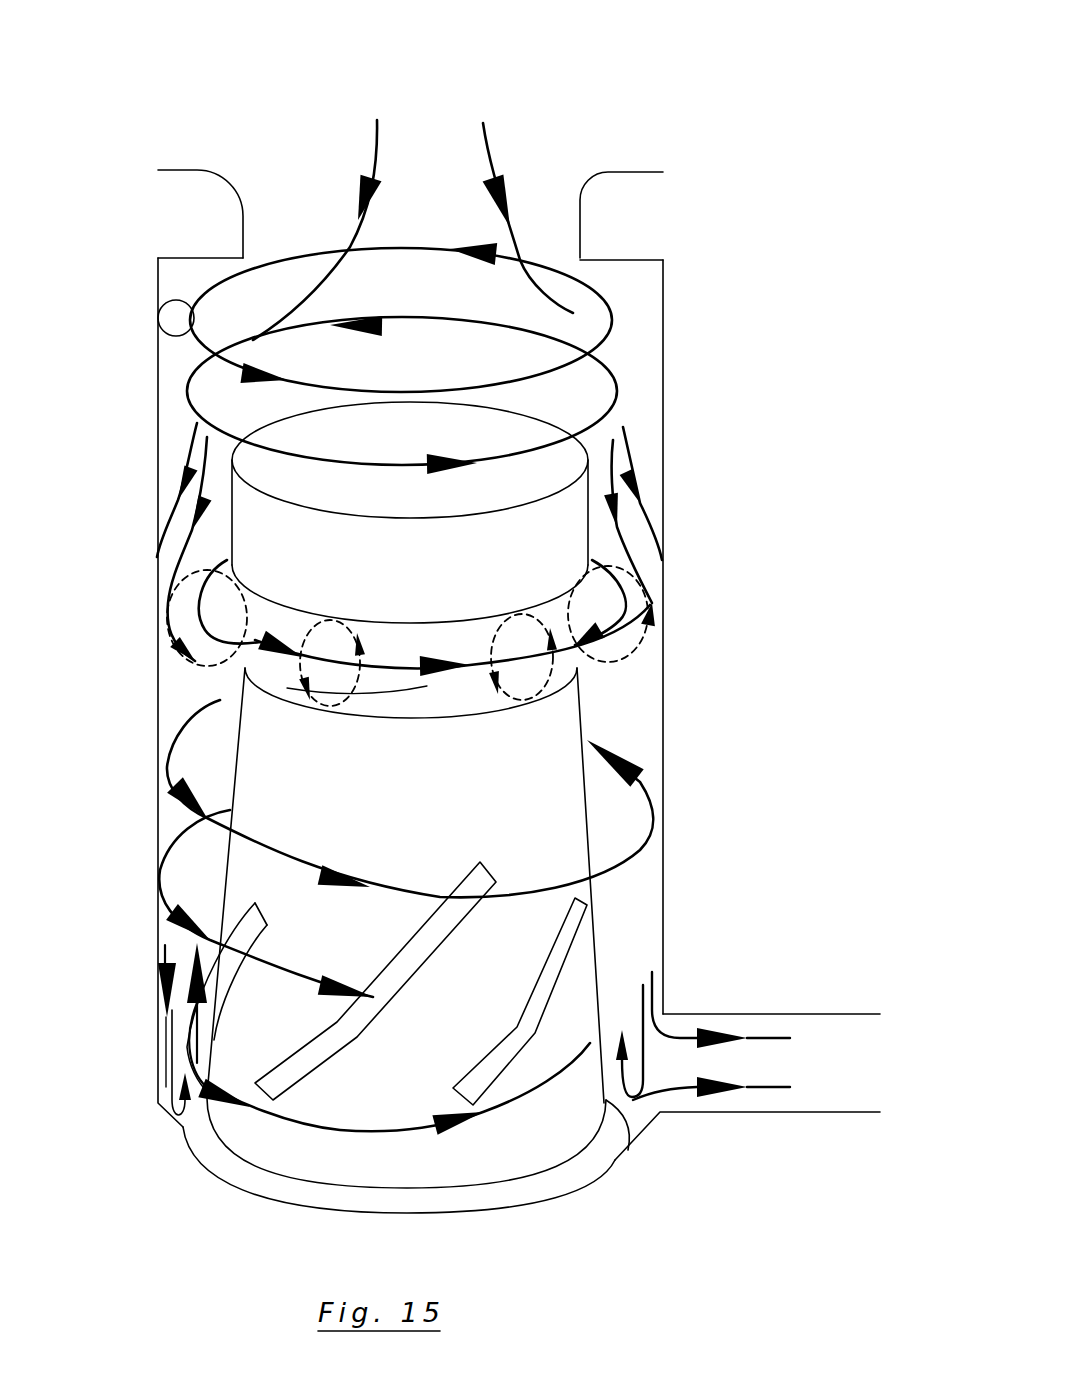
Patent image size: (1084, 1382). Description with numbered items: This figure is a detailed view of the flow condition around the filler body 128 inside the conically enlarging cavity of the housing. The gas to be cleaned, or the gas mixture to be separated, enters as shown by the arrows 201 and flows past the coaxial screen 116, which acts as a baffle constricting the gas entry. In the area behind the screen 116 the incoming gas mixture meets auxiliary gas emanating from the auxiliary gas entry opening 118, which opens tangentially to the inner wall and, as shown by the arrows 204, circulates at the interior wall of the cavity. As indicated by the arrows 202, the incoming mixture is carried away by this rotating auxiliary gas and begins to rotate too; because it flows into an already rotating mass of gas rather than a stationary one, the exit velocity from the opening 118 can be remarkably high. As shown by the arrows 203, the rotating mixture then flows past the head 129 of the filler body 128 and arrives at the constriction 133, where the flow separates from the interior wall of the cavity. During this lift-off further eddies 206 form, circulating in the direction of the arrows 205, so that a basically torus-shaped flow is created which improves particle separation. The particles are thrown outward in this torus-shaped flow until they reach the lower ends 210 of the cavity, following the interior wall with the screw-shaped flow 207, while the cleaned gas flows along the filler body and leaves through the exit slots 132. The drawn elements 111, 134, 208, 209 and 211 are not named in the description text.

The housing wall 111 is at (663, 707).
The screen 116 is at (205, 222).
The auxiliary gas entry opening 118 is at (163, 318).
The filler body 128 is at (503, 820).
The head 129 is at (277, 530).
The exit slots 132 is at (587, 930).
The constriction 133 is at (300, 680).
The outlet 134 is at (760, 1055).
The arrows 201 is at (481, 133).
The arrows 202 is at (195, 415).
The arrows 203 is at (628, 520).
The arrows 204 is at (565, 366).
The arrows 205 is at (617, 617).
The eddies 206 is at (173, 627).
The screw-shaped flow 207 is at (655, 838).
The curved vane 208 is at (215, 962).
The downward wall flow 209 is at (158, 975).
The lower ends 210 is at (177, 1118).
The bottom swirl flow 211 is at (442, 1128).